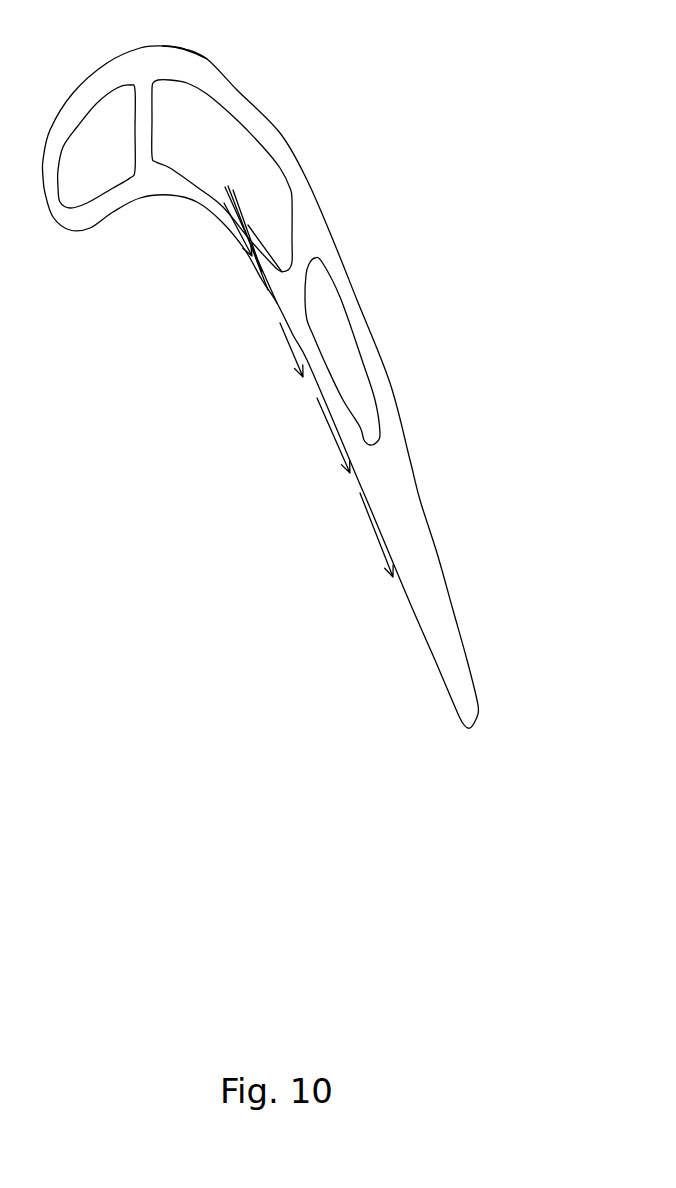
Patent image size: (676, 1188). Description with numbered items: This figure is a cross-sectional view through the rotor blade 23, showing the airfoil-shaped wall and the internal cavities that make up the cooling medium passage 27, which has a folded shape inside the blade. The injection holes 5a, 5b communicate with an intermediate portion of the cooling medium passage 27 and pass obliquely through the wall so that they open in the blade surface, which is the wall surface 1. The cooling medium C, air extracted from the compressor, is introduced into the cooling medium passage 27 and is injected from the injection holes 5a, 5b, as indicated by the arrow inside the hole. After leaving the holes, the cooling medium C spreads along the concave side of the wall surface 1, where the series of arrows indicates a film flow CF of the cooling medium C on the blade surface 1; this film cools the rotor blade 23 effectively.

The wall surface 1 is at (362, 478).
The rotor blade 23 is at (208, 58).
The cooling medium passage 27 is at (245, 153).
The injection hole 5a is at (215, 273).
The injection hole 5b is at (248, 265).
The cooling medium C is at (222, 230).
The film flow CF is at (330, 427).